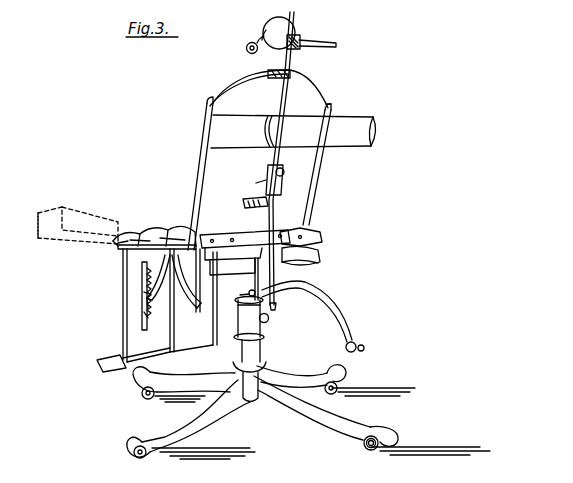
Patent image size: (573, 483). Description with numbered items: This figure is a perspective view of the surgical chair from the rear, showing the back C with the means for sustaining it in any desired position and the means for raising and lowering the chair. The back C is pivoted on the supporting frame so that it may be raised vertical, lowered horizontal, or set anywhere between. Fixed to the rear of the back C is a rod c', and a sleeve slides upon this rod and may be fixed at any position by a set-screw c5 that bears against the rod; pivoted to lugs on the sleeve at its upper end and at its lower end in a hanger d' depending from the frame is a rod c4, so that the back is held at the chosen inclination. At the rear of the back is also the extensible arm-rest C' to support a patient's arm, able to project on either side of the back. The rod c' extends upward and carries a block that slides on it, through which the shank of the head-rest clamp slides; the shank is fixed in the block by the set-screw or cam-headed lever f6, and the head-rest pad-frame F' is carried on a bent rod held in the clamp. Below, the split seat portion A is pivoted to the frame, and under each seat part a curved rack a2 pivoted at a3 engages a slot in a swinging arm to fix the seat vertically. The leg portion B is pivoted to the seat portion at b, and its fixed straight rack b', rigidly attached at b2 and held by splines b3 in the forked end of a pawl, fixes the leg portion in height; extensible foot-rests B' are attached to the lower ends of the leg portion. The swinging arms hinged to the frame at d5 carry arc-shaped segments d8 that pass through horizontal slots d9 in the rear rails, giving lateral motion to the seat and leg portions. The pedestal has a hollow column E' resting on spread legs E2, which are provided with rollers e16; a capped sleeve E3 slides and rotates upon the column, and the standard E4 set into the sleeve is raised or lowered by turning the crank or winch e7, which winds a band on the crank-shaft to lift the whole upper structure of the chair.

The pad-frame F' is at (287, 32).
The set-screw or cam-headed lever f6 is at (300, 49).
The hanger d' is at (282, 171).
The back C is at (259, 160).
The extensible arm-rest C' is at (293, 131).
The rod c' is at (307, 106).
The set-screw c5 is at (285, 175).
The rod c4 is at (277, 219).
The seat portion A is at (170, 234).
The extensible foot-rests B' is at (82, 294).
The leg portion B is at (127, 303).
The rack attachment point b2 is at (140, 336).
The splines b3 is at (146, 296).
The rack pivot a3 is at (158, 279).
The curved rack a2 is at (194, 306).
The straight rack b' is at (154, 321).
The leg portion pivot b is at (163, 281).
The arc-shaped segments d8 is at (262, 234).
The horizontal slots d9 is at (310, 242).
The arm hinge d5 is at (320, 252).
The standard E4 is at (239, 288).
The capped sleeve E3 is at (251, 319).
The crank or winch e7 is at (118, 458).
The hollow column E' is at (256, 382).
The spread legs E2 is at (203, 428).
The rollers e16 is at (370, 450).